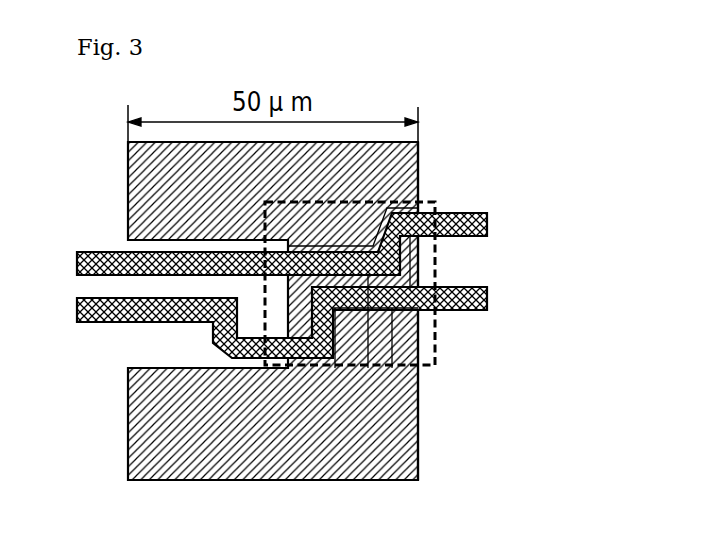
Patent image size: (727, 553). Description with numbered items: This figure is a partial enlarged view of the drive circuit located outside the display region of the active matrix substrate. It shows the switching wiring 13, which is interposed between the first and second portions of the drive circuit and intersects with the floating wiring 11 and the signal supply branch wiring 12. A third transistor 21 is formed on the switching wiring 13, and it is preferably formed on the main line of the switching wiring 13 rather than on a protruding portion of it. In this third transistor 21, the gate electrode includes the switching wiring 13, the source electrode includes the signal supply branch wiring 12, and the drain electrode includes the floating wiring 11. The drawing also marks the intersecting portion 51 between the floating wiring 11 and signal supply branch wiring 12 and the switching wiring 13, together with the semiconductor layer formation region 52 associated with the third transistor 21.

The floating wiring 11 is at (487, 224).
The signal supply branch wiring 12 is at (487, 297).
The switching wiring 13 is at (408, 440).
The third transistor 21 is at (437, 337).
The intersecting portion between floating wiring and signal supply branch wiring, an 51 is at (362, 368).
The semiconductor layer formation region 52 is at (392, 368).